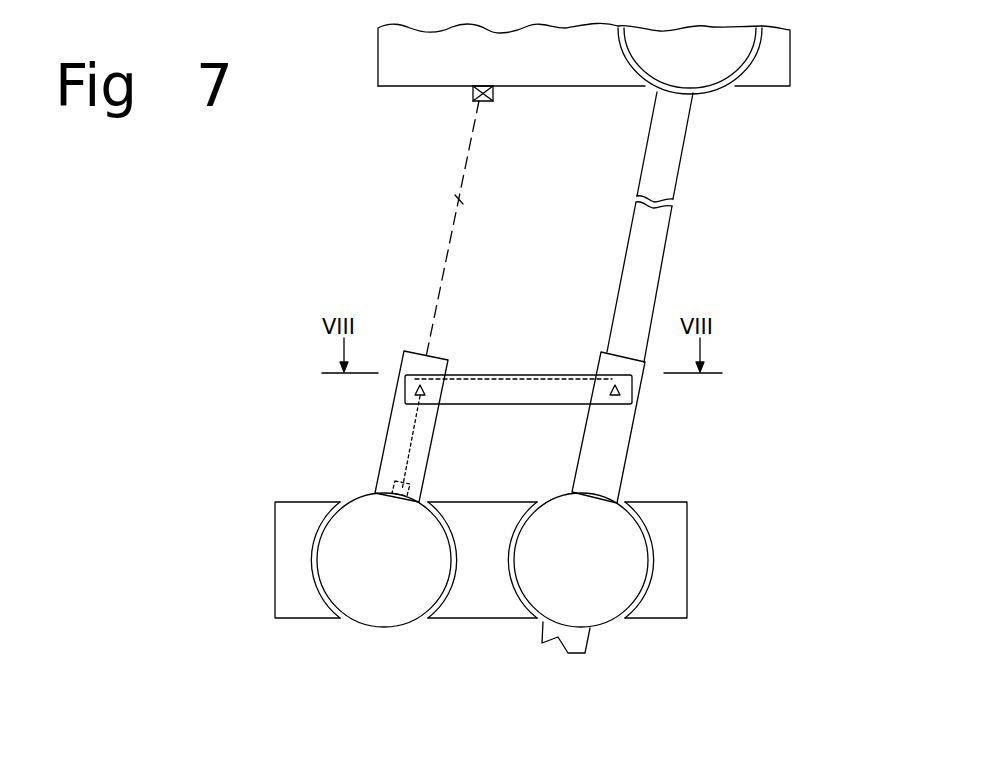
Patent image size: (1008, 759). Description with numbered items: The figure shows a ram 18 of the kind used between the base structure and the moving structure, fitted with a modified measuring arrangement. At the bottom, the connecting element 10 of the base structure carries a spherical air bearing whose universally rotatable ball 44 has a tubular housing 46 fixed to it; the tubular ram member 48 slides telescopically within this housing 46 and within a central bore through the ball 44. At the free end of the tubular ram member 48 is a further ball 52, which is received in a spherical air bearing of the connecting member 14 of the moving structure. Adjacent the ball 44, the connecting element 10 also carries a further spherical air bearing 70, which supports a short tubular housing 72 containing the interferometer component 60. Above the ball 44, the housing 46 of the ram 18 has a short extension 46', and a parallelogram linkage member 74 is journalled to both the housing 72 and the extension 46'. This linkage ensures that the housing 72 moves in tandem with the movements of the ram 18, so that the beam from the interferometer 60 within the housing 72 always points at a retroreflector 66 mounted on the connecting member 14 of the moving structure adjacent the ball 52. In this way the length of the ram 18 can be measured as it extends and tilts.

The connecting member 14 is at (790, 60).
The further ball 52 is at (712, 98).
The tubular ram member 48 is at (672, 200).
The ram 18 is at (578, 297).
The short extension 46' is at (674, 427).
The short tubular housing 72 is at (387, 436).
The parallelogram linkage member 74 is at (518, 374).
The interferometer component 60 is at (378, 478).
The retroreflector 66 is at (475, 100).
The connecting element 10 is at (687, 572).
The further spherical air bearing 70 is at (313, 576).
The universally rotatable ball 44 is at (606, 615).
The tubular housing 46 is at (561, 676).